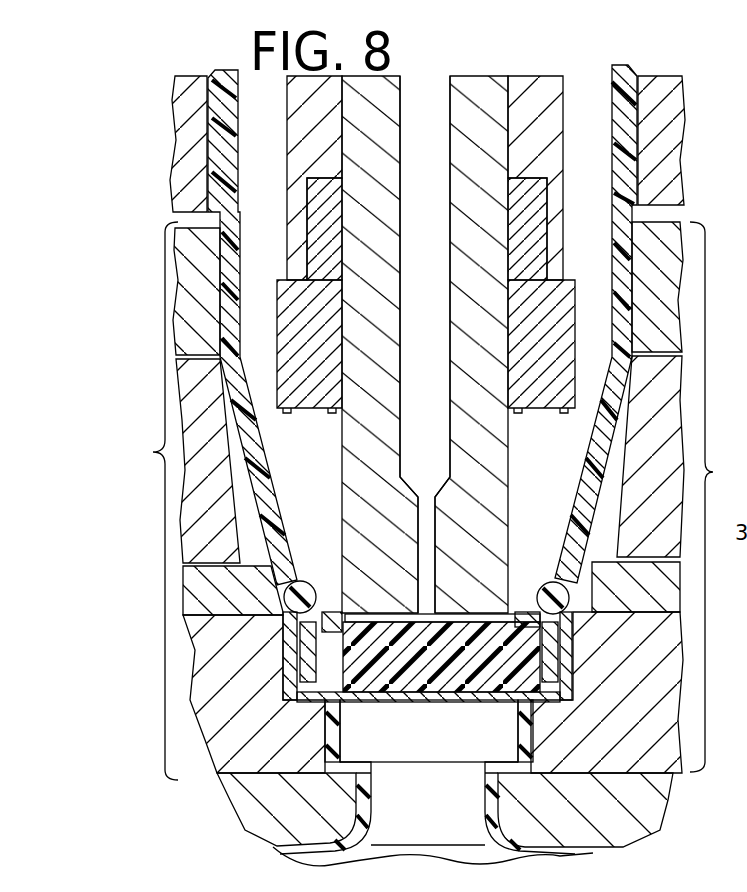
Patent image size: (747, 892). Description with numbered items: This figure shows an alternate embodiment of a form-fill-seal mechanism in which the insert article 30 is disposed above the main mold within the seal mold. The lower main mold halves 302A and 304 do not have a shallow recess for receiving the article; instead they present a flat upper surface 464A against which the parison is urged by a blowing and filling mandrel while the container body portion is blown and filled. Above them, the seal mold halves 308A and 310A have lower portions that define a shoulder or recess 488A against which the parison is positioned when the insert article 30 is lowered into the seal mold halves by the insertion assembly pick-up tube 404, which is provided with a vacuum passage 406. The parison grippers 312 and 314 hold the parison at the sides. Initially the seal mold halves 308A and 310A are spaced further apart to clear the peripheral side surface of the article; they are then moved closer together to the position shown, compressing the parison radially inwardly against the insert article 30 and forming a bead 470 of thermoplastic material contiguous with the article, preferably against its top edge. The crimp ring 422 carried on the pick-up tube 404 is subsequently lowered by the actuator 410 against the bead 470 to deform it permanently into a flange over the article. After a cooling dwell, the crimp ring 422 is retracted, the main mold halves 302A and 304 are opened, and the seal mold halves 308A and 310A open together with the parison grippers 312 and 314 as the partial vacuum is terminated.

The parison gripper 312 is at (188, 137).
The parison gripper 314 is at (662, 88).
The seal mold half 308A is at (153, 452).
The seal mold half 310A is at (639, 497).
The main mold half 302A is at (243, 801).
The main mold half 304 is at (641, 808).
The vacuum passage 406 is at (441, 106).
The actuator 410 is at (550, 163).
The crimp ring 422 is at (568, 298).
The insert pick-up tube 404 is at (500, 508).
The bead 470 is at (558, 590).
The insert article 30 is at (386, 712).
The shoulder or recess 488A is at (530, 722).
The flat upper surface 464A is at (513, 762).